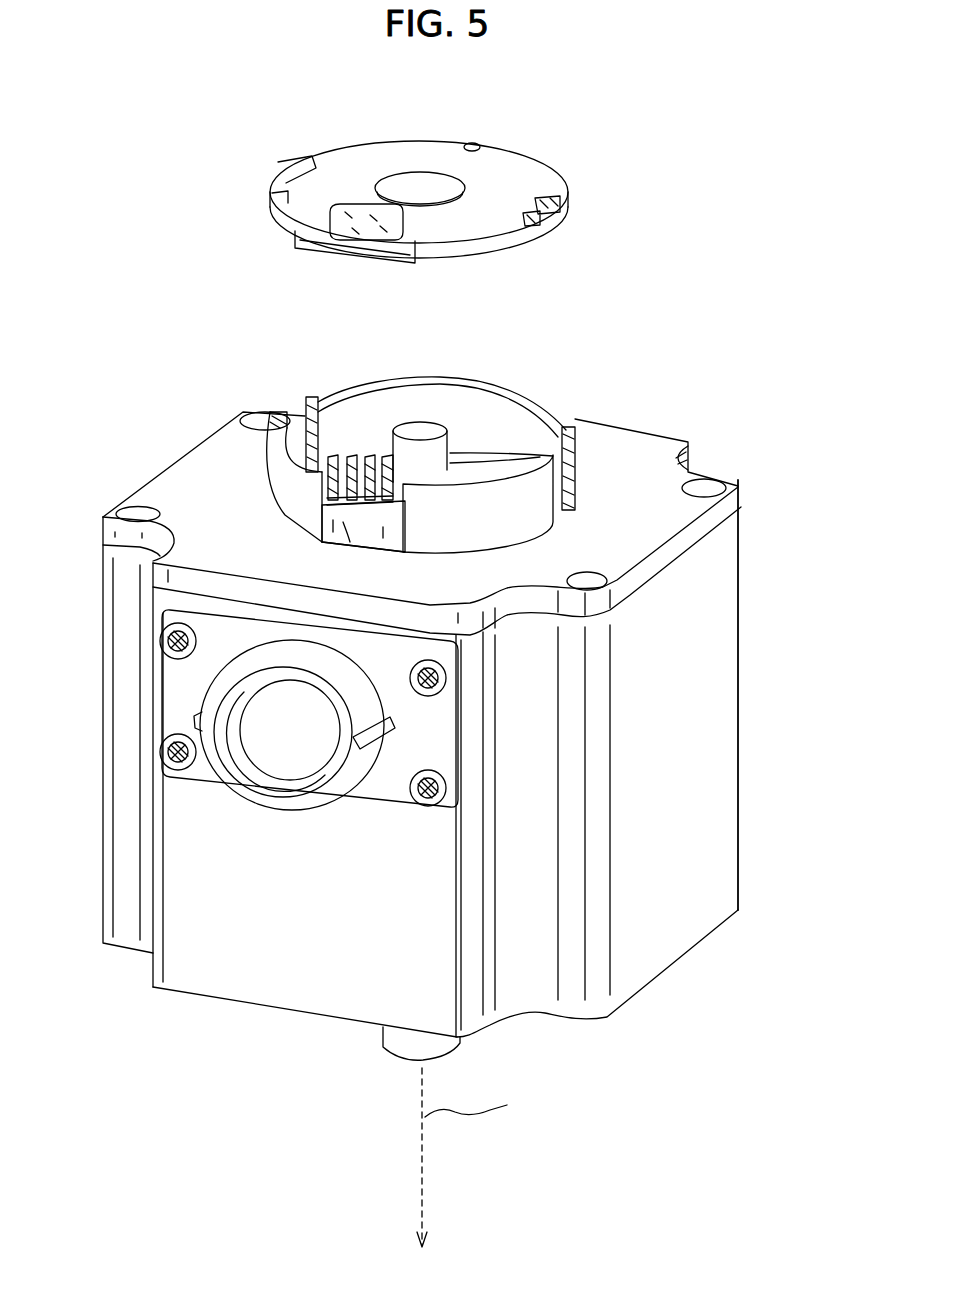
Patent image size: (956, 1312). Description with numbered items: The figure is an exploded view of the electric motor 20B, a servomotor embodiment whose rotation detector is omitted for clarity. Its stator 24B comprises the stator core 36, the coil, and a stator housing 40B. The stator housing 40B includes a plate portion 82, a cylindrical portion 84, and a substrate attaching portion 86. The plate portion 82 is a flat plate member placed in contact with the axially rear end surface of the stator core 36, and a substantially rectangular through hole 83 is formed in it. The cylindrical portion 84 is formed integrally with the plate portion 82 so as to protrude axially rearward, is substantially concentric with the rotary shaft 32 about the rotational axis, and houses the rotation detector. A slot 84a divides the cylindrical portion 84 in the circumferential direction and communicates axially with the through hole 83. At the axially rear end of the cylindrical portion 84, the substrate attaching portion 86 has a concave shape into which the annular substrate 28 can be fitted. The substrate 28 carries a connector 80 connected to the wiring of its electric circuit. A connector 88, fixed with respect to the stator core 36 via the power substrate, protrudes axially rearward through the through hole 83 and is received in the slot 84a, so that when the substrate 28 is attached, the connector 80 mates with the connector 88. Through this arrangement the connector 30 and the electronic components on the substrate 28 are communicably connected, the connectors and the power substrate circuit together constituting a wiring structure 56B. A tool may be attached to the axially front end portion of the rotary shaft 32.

The electric motor 20B is at (826, 100).
The stator 24B is at (140, 287).
The substrate 28 is at (540, 158).
The connector 80 is at (362, 205).
The wiring structure 56B is at (350, 252).
The rotary shaft 32 is at (421, 428).
The substrate attaching portion 86 is at (505, 385).
The stator housing 40B is at (690, 438).
The cylindrical portion 84 is at (472, 524).
The slot 84a is at (327, 480).
The plate portion 82 is at (644, 529).
The connector 88 is at (355, 530).
The through hole 83 is at (365, 540).
The connector 30 is at (277, 812).
The stator core 36 is at (725, 710).